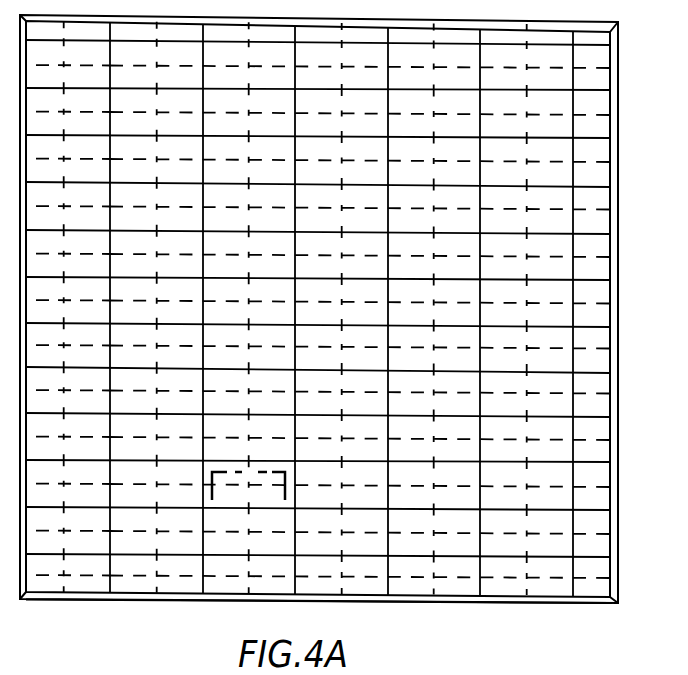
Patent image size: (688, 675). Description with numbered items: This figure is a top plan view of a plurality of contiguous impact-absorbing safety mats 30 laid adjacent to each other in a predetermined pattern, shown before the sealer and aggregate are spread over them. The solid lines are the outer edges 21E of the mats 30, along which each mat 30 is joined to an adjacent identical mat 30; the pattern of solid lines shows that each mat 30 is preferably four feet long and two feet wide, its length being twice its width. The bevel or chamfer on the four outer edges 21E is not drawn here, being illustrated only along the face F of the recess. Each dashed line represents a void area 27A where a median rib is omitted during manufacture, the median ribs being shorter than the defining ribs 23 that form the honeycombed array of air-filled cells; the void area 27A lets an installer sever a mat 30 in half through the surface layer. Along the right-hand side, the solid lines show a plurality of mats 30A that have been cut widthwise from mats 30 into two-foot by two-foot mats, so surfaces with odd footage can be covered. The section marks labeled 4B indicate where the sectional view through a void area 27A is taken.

The outer edge 21E is at (392, 594).
The ribs 23 is at (617, 585).
The void area 27A is at (127, 576).
The mat 30 is at (498, 586).
The mats cut as two-by-two mats 30A is at (602, 471).
The face of the recess F is at (590, 603).
The section line 4B- 4B is at (248, 481).